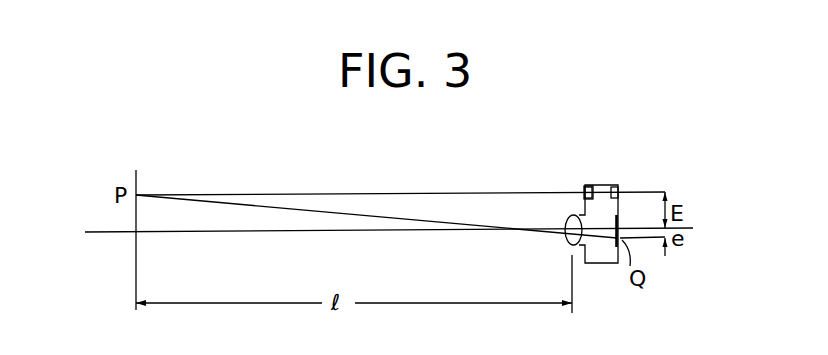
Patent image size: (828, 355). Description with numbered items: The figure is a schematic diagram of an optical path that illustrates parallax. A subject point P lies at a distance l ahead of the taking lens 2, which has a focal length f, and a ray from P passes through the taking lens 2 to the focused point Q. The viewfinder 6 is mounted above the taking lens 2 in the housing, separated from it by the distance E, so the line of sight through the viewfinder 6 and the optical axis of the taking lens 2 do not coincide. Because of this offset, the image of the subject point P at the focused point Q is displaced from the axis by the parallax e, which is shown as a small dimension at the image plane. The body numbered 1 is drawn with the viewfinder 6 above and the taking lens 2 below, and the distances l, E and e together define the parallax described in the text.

The housing 1 is at (599, 185).
The taking lens 2 is at (565, 223).
The viewfinder 6 is at (584, 192).